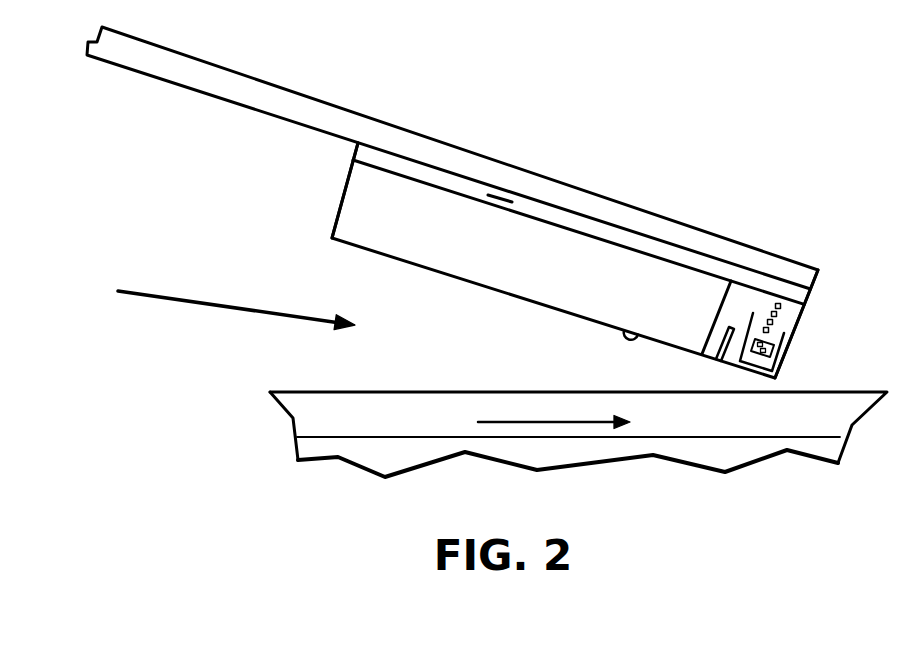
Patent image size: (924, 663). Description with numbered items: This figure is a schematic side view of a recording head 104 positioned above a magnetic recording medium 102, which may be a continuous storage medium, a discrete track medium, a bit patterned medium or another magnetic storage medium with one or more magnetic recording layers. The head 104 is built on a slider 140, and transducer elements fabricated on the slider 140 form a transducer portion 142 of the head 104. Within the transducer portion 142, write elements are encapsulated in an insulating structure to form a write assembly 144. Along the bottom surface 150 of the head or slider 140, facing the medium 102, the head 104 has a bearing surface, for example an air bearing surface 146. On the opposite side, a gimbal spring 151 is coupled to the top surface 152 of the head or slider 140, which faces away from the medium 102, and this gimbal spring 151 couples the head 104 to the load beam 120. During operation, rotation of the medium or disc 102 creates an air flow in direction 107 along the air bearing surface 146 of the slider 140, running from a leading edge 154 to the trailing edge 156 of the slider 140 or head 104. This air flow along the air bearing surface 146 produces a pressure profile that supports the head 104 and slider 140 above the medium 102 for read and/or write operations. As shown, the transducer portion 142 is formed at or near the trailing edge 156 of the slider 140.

The medium 102 is at (817, 426).
The head 104 is at (805, 258).
The air flow direction 107 is at (553, 420).
The load beam 120 is at (382, 135).
The slider 140 is at (545, 249).
The transducer portion 142 is at (812, 310).
The write assembly 144 is at (790, 300).
The air bearing surface 146 is at (503, 300).
The bottom surface 150 is at (644, 334).
The gimbal spring 151 is at (502, 197).
The top surface 152 is at (640, 248).
The leading edge 154 is at (344, 192).
The trailing edge 156 is at (793, 332).